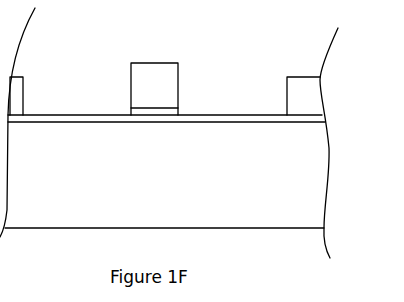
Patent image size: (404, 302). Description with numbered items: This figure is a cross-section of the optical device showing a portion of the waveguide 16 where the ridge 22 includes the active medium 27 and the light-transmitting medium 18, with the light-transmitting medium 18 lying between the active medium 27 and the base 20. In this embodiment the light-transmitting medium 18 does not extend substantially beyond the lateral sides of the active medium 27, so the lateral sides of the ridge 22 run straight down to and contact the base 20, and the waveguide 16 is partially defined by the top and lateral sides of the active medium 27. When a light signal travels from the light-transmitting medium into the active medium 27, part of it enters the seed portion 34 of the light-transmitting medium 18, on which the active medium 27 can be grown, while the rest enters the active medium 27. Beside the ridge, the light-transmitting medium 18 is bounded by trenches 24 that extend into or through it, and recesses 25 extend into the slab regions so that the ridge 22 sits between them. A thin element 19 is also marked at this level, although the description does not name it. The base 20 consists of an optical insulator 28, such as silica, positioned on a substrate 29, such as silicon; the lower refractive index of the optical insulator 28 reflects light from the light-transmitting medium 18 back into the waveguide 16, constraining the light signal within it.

The waveguide 16 is at (190, 58).
The light-transmitting medium 18 is at (17, 97).
The thin layer 19 is at (176, 111).
The base 20 is at (342, 116).
The ridge 22 is at (146, 62).
The trench 24 is at (312, 77).
The recess 25 is at (17, 112).
The active medium 27 is at (141, 88).
The optical insulator 28 is at (77, 120).
The substrate 29 is at (304, 213).
The seed portion 34 is at (157, 110).